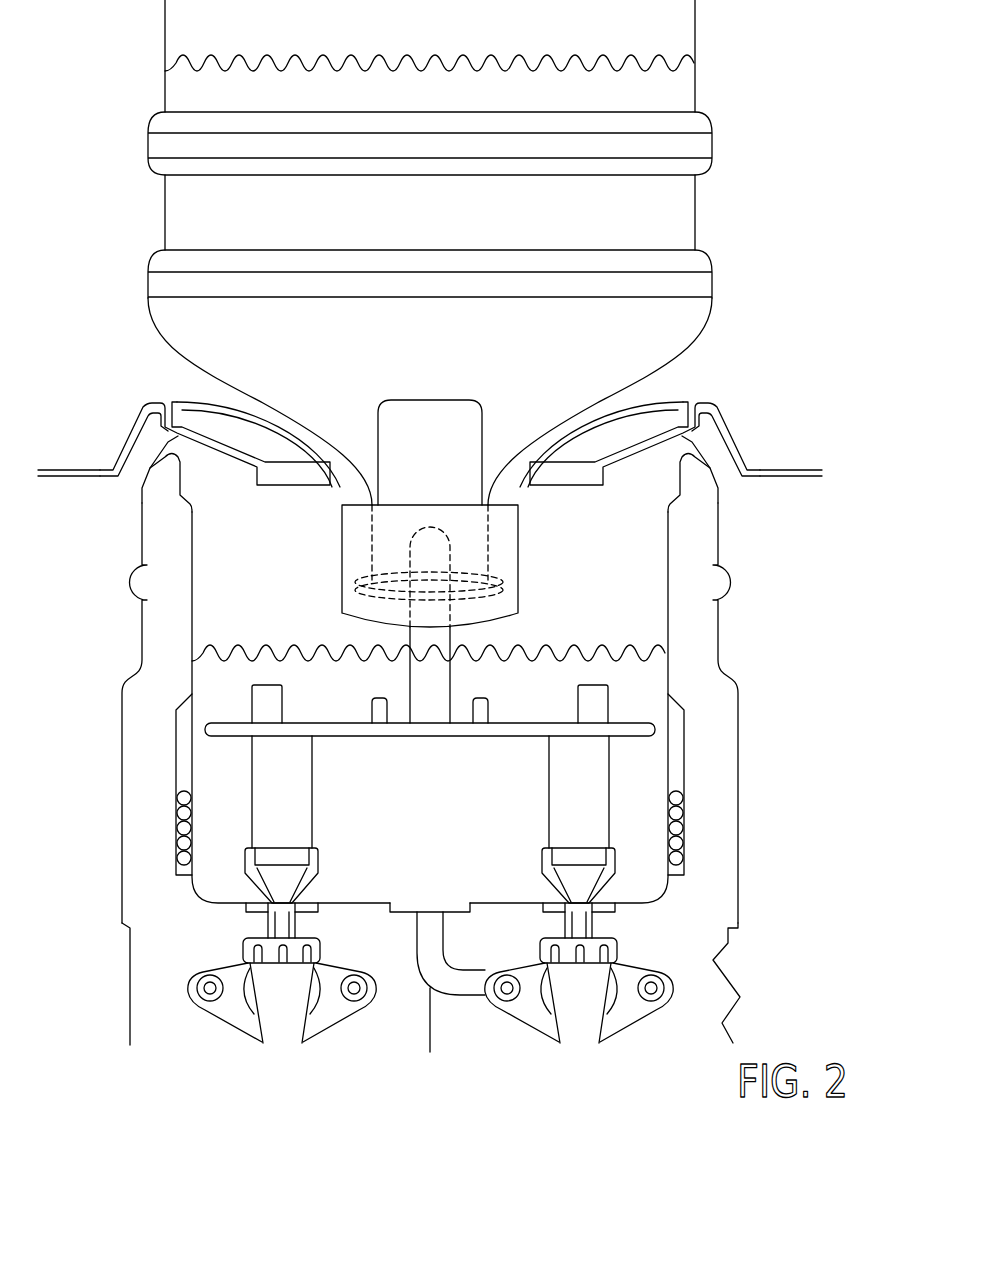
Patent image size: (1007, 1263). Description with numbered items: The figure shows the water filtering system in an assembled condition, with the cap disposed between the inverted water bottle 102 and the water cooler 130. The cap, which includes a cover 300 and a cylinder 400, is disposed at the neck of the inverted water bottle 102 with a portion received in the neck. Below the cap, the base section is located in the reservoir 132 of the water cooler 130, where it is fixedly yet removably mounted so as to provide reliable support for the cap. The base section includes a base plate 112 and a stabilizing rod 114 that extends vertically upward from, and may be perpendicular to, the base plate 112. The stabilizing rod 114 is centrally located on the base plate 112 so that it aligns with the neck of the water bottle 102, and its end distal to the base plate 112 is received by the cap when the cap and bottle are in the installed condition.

The inverted water bottle 102 is at (695, 220).
The cylinder 400 is at (483, 447).
The cover 300 is at (643, 520).
The water cooler 130 is at (738, 875).
The reservoir 132 is at (632, 613).
The stabilizing rod 114 is at (408, 692).
The base plate 112 is at (358, 737).